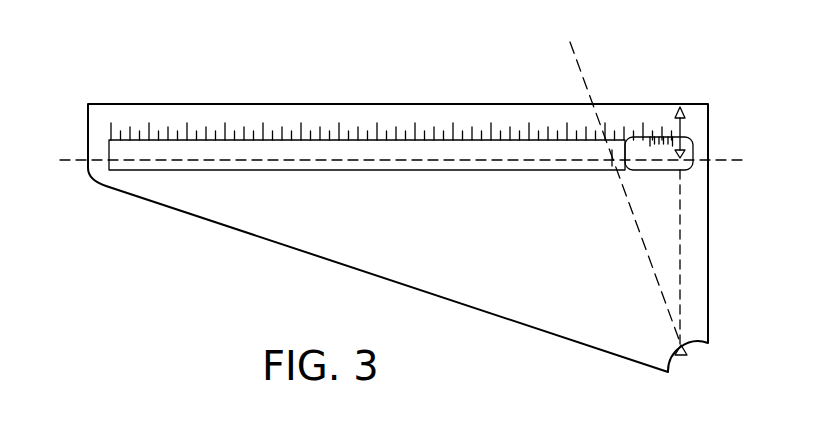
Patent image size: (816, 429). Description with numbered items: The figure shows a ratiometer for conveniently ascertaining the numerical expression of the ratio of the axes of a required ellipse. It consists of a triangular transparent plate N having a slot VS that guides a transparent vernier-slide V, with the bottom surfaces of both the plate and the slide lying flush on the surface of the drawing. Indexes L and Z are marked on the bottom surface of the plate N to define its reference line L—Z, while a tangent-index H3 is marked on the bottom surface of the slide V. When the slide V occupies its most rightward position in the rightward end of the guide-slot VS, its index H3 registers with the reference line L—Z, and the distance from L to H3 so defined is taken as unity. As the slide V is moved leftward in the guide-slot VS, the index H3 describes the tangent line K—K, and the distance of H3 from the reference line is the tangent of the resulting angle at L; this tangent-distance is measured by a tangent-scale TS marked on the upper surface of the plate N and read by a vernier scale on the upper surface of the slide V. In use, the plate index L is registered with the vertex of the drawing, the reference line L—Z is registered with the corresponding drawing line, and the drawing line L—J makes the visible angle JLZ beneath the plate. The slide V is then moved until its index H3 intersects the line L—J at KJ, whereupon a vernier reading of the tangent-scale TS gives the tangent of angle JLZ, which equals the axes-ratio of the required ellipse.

The triangular transparent plate N is at (398, 238).
The tangent-scale TS is at (230, 118).
The guide-slot VS is at (175, 153).
The vernier-slide V is at (660, 170).
The tangent-index H3 is at (690, 152).
The index Z is at (688, 113).
The index L is at (687, 262).
The tangent line K— K is at (400, 160).
The drawing line L— J is at (625, 186).
The intersection point KJ is at (613, 159).